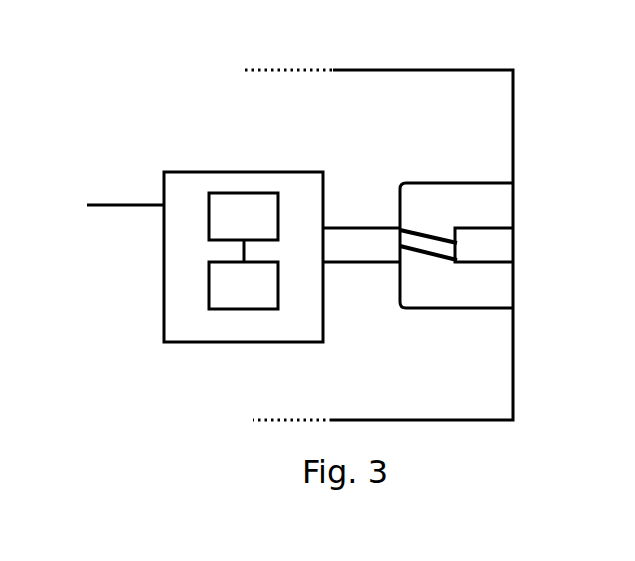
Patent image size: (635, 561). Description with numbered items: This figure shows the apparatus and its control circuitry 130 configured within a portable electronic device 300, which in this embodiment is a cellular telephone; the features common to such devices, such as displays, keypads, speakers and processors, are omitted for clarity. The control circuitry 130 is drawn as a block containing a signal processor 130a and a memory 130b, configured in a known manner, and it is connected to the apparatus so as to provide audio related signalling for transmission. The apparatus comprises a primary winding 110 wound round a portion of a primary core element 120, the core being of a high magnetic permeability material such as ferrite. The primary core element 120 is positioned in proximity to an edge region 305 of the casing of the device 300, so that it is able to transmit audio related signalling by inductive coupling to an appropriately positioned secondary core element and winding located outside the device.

The portable electronic device 300 is at (402, 82).
The edge region 305 is at (537, 172).
The control circuitry 130 is at (232, 183).
The signal processor 130a is at (213, 233).
The memory 130b is at (213, 301).
The primary core element 120 is at (433, 285).
The primary winding 110 is at (445, 228).